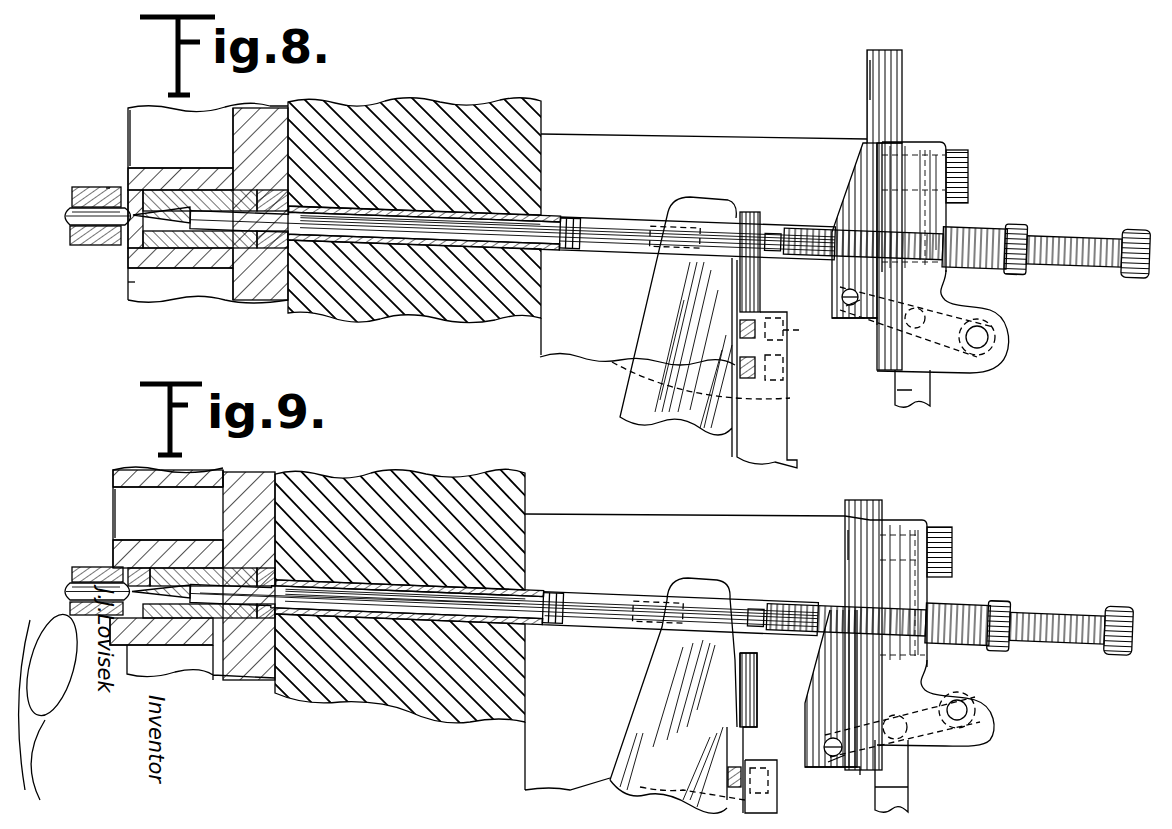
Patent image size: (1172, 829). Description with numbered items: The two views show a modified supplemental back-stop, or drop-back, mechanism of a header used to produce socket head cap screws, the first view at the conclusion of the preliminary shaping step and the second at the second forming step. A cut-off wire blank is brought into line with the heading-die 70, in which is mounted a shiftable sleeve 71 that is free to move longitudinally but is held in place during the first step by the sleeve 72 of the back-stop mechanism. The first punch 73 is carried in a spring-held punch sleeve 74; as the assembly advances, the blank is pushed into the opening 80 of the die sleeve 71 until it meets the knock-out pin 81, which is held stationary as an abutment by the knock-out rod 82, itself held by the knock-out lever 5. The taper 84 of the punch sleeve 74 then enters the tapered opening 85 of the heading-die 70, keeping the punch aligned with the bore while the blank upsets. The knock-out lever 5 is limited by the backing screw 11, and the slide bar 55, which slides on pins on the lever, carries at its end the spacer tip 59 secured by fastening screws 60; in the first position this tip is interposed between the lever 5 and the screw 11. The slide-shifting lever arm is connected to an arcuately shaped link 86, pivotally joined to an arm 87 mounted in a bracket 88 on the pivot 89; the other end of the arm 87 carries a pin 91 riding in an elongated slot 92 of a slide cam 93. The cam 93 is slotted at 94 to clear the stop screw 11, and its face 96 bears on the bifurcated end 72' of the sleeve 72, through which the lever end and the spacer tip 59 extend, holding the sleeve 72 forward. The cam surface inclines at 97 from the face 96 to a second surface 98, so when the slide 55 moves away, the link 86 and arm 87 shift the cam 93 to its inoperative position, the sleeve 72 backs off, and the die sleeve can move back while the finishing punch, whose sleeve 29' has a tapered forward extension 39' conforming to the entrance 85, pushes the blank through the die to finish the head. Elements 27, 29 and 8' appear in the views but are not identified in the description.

In FIG. 8, the knock-out lever 5 is at (666, 310).
In FIG. 9, the knock-out lever 5 is at (668, 687).
In FIG. 8, the backing screw 11 is at (1073, 250).
In FIG. 9, the backing screw 11 is at (1063, 618).
In FIG. 9, the work piece collar 27 is at (88, 566).
In FIG. 8, the work piece 29 is at (94, 163).
In FIG. 9, the finishing punch sleeve 29' is at (104, 583).
In FIG. 9, the forward extension 39' is at (96, 620).
In FIG. 8, the slide bar 55 is at (776, 395).
In FIG. 9, the slide bar 55 is at (778, 800).
In FIG. 8, the spacer element or tip 59 is at (747, 214).
In FIG. 9, the spacer element or tip 59 is at (758, 678).
In FIG. 8, the fastening screws 60 is at (784, 337).
In FIG. 9, the fastening screws 60 is at (768, 768).
In FIG. 8, the heading-die 70 is at (226, 198).
In FIG. 9, the heading-die 70 is at (190, 565).
In FIG. 8, the shiftable sleeve 71 is at (226, 240).
In FIG. 9, the shiftable sleeve 71 is at (230, 560).
In FIG. 8, the sleeve 72 is at (417, 203).
In FIG. 9, the sleeve 72 is at (397, 590).
In FIG. 8, the bifurcated end 72' is at (567, 230).
In FIG. 9, the bifurcated end 72' is at (558, 599).
In FIG. 8, the first punch 73 is at (92, 188).
In FIG. 8, the punch sleeve 74 is at (98, 246).
In FIG. 8, the opening of the die sleeve 80 is at (156, 244).
In FIG. 9, the opening of the die sleeve 80 is at (155, 555).
In FIG. 8, the knock-out pin 81 is at (210, 248).
In FIG. 8, the knock-out rod 82 is at (424, 236).
In FIG. 9, the knock-out rod 82 is at (416, 610).
In FIG. 8, the taper of the punch sleeve 84 is at (118, 185).
In FIG. 8, the tapered opening 85 is at (128, 285).
In FIG. 9, the tapered opening 85 is at (112, 564).
In FIG. 8, the arcuately shaped link 86 is at (921, 392).
In FIG. 9, the arcuately shaped link 86 is at (901, 801).
In FIG. 8, the arm 87 is at (983, 308).
In FIG. 9, the arm 87 is at (927, 711).
In FIG. 8, the bracket 88 is at (930, 274).
In FIG. 9, the bracket 88 is at (920, 584).
In FIG. 8, the pivot 89 is at (990, 337).
In FIG. 9, the pivot 89 is at (957, 718).
In FIG. 8, the pin 91 is at (842, 297).
In FIG. 9, the pin 91 is at (826, 748).
In FIG. 8, the elongated slot 92 is at (848, 306).
In FIG. 9, the elongated slot 92 is at (830, 762).
In FIG. 8, the slide cam 93 is at (900, 130).
In FIG. 9, the slide cam 93 is at (860, 514).
In FIG. 8, the slot 94 is at (878, 100).
In FIG. 9, the slot 94 is at (846, 558).
In FIG. 8, the face of the cam slide 96 is at (826, 274).
In FIG. 9, the face of the cam slide 96 is at (801, 713).
In FIG. 8, the inclined surface 97 is at (853, 192).
In FIG. 9, the inclined surface 97 is at (825, 654).
In FIG. 8, the second surface 98 is at (868, 124).
In FIG. 9, the second surface 98 is at (850, 572).
In FIG. 9, the spindle 8' is at (359, 652).